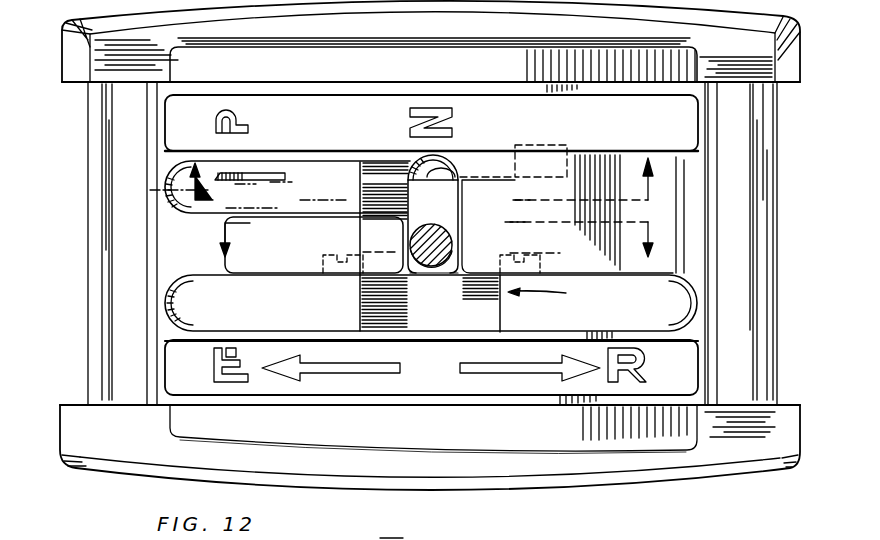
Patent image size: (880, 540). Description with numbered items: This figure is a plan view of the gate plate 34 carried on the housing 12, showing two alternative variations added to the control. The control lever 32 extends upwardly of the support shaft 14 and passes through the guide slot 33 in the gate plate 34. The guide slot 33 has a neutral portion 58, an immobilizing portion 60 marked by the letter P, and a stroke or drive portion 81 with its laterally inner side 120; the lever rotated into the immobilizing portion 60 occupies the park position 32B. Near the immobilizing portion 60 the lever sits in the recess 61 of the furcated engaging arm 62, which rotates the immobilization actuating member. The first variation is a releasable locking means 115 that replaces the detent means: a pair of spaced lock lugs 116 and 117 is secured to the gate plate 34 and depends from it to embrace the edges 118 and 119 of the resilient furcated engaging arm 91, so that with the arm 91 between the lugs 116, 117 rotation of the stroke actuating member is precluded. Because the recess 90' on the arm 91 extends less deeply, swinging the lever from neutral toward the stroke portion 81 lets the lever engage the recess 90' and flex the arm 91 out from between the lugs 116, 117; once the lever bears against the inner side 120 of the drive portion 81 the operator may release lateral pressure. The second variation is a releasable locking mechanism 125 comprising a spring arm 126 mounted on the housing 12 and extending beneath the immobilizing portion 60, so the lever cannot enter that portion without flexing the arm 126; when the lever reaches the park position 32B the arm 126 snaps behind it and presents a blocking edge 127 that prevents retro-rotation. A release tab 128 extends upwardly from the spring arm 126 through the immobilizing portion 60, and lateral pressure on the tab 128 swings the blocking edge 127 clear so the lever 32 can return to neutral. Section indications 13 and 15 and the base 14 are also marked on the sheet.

The housing 12 is at (745, 176).
The section line 13 is at (437, 239).
The support shaft 14 is at (405, 535).
The section line 15 is at (431, 147).
The control lever 32 is at (437, 247).
The immobilized or park position 32B is at (150, 190).
The guide slot 33 is at (175, 273).
The gate plate 34 is at (560, 184).
The neutral portion 58 is at (456, 228).
The immobilizing portion 60 is at (304, 190).
The recess 61 is at (450, 163).
The furcated engaging arm 62 is at (410, 207).
The stroke portion 81 is at (195, 313).
The recess 90' is at (395, 299).
The furcated engaging arm 91 is at (448, 297).
The releasable locking means 115 is at (556, 294).
The lock lug 116 is at (525, 258).
The lock lug 117 is at (332, 275).
The edge 118 is at (503, 312).
The edge 119 is at (360, 313).
The laterally inner side 120 is at (248, 280).
The releasable locking mechanism 125 is at (232, 188).
The spring arm 126 is at (343, 180).
The blocking edge 127 is at (215, 178).
The release tab 128 is at (272, 172).